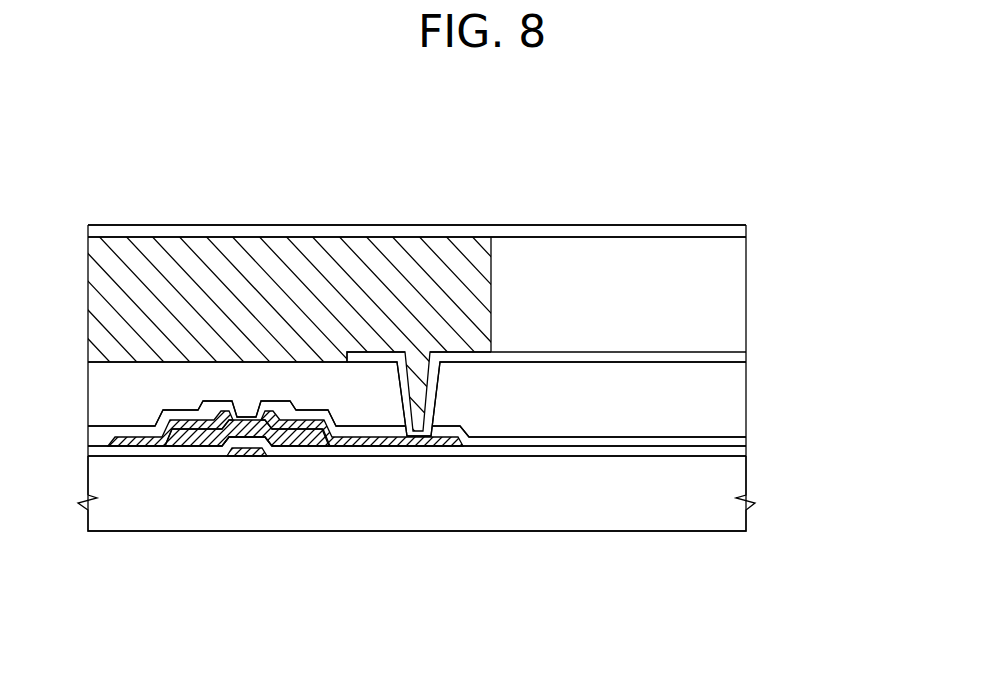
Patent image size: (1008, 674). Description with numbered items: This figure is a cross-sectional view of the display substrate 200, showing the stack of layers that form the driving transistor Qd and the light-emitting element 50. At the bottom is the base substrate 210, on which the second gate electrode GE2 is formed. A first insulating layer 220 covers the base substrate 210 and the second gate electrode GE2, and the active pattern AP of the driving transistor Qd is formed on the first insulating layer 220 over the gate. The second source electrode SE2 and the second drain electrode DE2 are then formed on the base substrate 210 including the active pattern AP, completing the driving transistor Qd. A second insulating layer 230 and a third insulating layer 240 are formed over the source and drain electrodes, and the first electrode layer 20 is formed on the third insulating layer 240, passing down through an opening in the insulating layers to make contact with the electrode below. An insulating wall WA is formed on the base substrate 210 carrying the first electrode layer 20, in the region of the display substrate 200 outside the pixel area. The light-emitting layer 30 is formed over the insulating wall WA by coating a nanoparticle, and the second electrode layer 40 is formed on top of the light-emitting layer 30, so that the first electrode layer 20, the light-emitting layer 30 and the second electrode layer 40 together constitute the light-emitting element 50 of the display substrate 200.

The display substrate 200 is at (421, 146).
The insulating wall WA is at (314, 256).
The second electrode layer 40 is at (746, 232).
The light-emitting layer 30 is at (746, 296).
The light-emitting element 50 is at (813, 222).
The first electrode layer 20 is at (746, 357).
The third insulating layer 240 is at (746, 400).
The second insulating layer 230 is at (746, 436).
The first insulating layer 220 is at (746, 456).
The base substrate 210 is at (746, 515).
The second source electrode SE2 is at (192, 431).
The second gate electrode GE2 is at (250, 451).
The second drain electrode DE2 is at (298, 431).
The active pattern AP is at (318, 433).
The driving transistor Qd is at (367, 581).